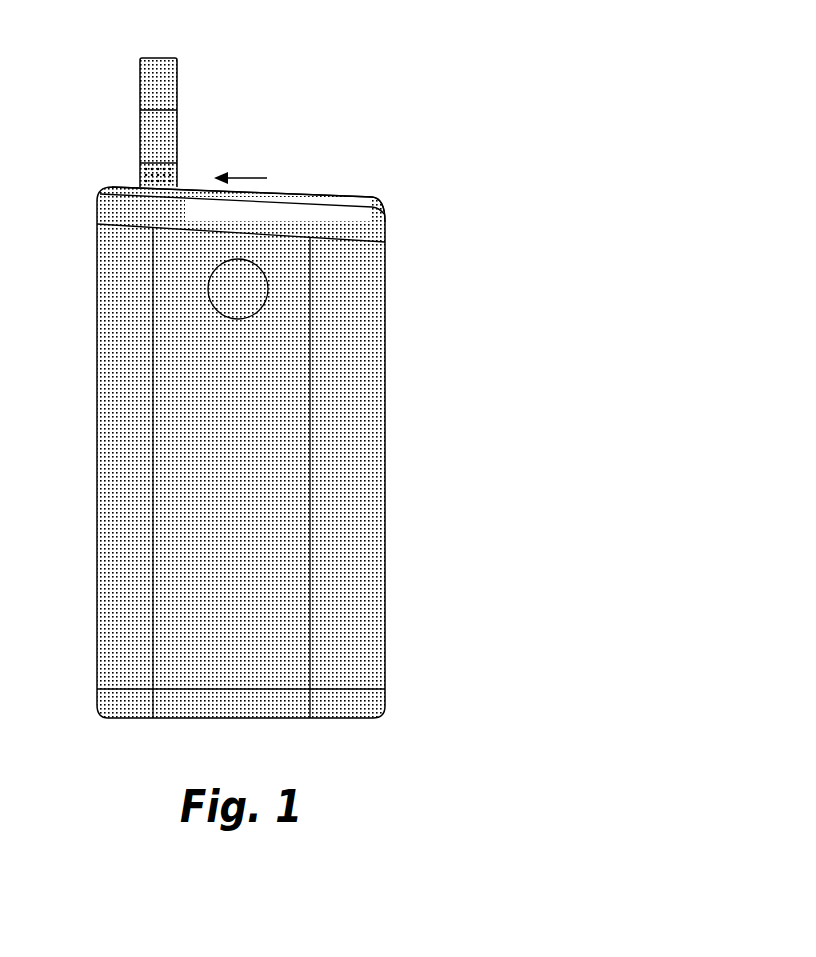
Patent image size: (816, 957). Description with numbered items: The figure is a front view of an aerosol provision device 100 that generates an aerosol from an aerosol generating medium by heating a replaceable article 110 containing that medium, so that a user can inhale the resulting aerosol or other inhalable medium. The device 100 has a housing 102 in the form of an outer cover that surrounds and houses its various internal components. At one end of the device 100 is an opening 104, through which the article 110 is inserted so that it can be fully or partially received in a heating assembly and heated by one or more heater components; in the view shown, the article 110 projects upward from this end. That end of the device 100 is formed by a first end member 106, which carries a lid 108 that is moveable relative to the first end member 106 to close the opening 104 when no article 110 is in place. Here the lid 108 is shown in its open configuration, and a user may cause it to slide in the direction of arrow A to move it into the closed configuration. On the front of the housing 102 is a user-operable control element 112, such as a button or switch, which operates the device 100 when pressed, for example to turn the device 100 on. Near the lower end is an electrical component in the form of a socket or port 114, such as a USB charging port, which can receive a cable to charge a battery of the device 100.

The aerosol provision device 100 is at (358, 62).
The housing 102 is at (387, 263).
The opening 104 is at (143, 186).
The first end member 106 is at (363, 200).
The lid 108 is at (305, 190).
The replaceable article 110 is at (140, 90).
The user-operable control element 112 is at (233, 300).
The socket/port 114 is at (377, 700).
The arrow A is at (240, 178).